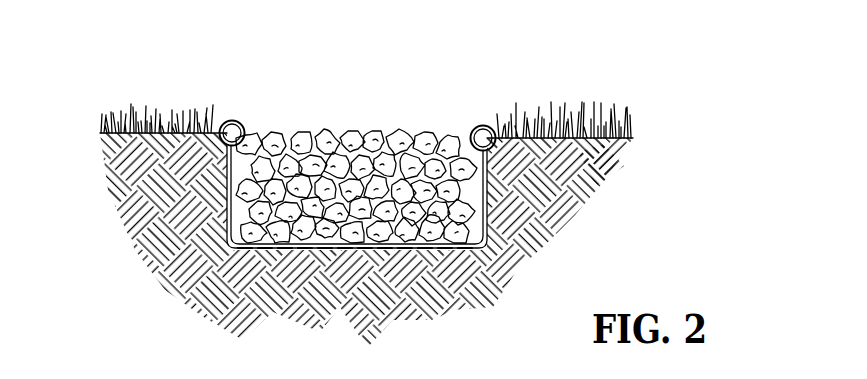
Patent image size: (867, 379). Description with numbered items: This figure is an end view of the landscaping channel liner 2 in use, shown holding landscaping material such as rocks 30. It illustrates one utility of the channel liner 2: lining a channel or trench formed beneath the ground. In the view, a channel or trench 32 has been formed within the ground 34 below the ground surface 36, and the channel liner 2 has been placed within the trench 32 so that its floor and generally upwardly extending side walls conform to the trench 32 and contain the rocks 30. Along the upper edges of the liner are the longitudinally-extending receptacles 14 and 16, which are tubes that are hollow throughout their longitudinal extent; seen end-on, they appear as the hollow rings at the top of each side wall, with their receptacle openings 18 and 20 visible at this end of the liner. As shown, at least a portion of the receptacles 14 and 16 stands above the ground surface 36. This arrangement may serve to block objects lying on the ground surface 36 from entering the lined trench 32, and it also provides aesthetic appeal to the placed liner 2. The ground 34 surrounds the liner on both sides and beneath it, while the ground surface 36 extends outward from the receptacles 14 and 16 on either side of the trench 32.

The landscaping channel liner 2 is at (257, 109).
The receptacle 14 is at (235, 120).
The receptacle 16 is at (481, 124).
The receptacle opening 18 is at (247, 130).
The receptacle opening 20 is at (485, 138).
The rocks 30 is at (385, 112).
The trench 32 is at (490, 203).
The ground 34 is at (588, 169).
The ground surface 36 is at (597, 130).